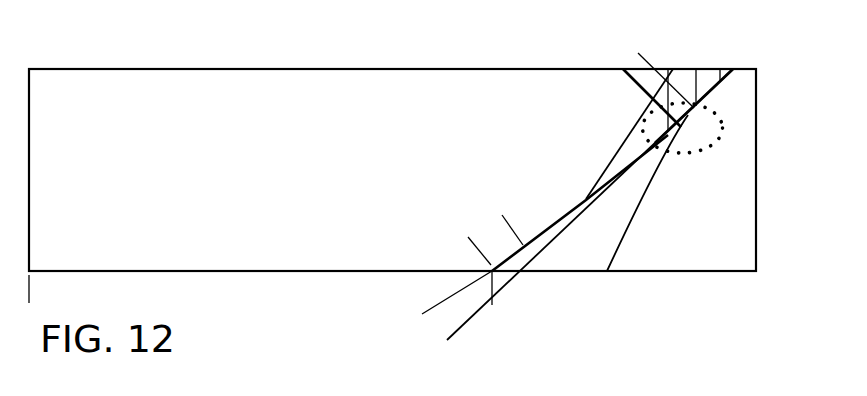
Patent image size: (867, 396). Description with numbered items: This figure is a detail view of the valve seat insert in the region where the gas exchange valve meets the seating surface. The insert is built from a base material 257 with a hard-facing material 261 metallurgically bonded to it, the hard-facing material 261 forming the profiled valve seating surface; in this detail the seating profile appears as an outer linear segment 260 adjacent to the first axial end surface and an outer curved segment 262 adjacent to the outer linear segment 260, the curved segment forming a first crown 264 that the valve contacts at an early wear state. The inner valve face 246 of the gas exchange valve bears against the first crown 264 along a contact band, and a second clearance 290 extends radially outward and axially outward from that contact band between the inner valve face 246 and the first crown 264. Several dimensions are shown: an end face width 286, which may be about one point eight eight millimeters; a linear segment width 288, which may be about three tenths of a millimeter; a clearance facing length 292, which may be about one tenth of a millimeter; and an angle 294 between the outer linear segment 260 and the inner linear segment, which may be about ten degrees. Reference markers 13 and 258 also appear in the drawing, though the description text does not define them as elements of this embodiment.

The blade body 13 is at (720, 138).
The inner valve face 246 is at (714, 86).
The base material 257 is at (502, 85).
The bevel facet 258 is at (621, 168).
The outer linear segment 260 is at (523, 273).
The hard-facing material 261 is at (634, 133).
The outer curved segment 262 is at (578, 215).
The first crown 264 is at (712, 99).
The end face width 286 is at (481, 290).
The linear segment width 288 is at (488, 244).
The second clearance 290 is at (695, 118).
The clearance facing length 292 is at (672, 42).
The angle 294 is at (467, 360).